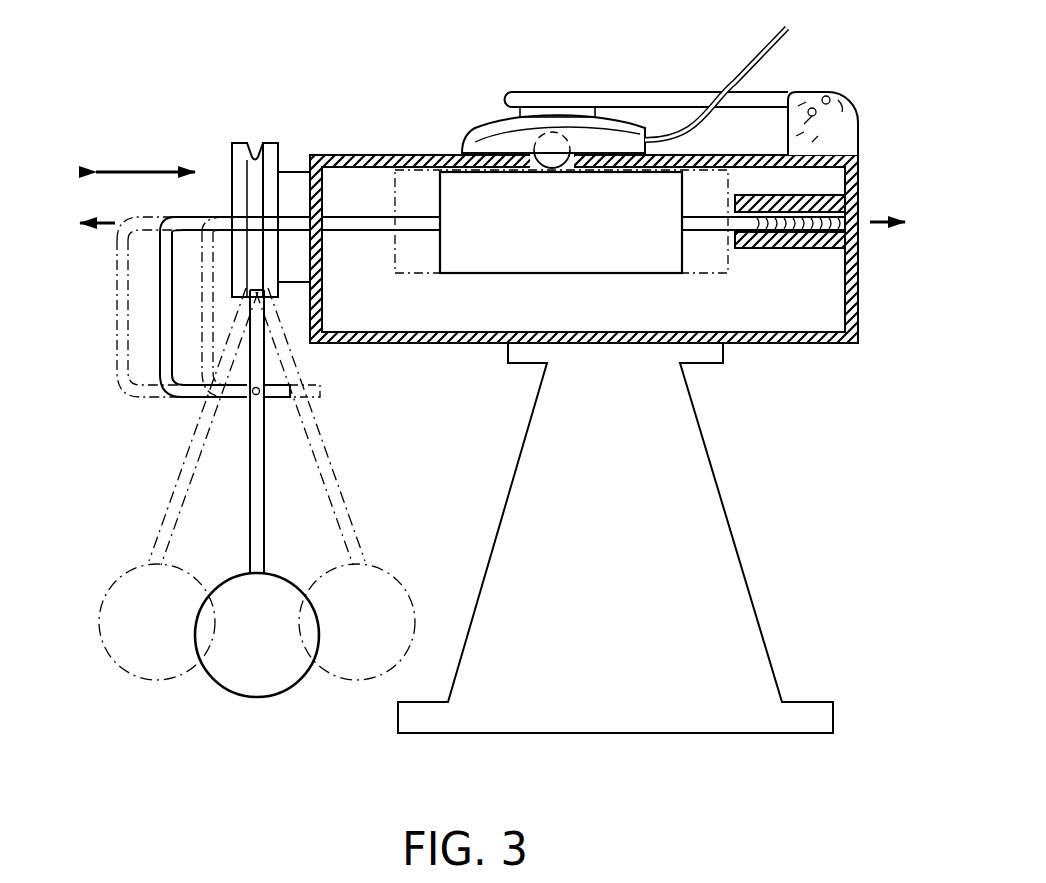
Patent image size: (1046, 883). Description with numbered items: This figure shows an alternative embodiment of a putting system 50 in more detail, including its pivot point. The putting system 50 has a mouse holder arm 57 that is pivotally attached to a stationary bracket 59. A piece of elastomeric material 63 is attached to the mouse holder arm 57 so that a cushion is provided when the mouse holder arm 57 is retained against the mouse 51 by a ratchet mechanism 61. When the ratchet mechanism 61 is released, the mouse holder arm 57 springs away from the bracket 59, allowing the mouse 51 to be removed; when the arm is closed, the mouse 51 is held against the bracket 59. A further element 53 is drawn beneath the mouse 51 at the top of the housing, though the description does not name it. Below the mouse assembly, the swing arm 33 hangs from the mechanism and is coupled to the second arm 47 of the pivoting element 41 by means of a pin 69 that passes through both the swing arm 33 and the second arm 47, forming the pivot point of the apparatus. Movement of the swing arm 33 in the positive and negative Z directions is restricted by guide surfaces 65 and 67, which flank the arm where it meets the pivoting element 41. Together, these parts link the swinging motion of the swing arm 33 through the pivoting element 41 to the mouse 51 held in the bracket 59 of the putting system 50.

The swing arm 33 is at (247, 520).
The pivoting element 41 is at (160, 318).
The second arm 47 is at (288, 389).
The putting system 50 is at (886, 579).
The mouse 51 is at (490, 126).
The roller 53 is at (552, 170).
The mouse holder arm 57 is at (546, 91).
The stationary bracket 59 is at (712, 460).
The ratchet mechanism 61 is at (850, 134).
The elastomeric material 63 is at (590, 107).
The guide surface 65 is at (245, 150).
The guide surface 67 is at (266, 150).
The pin 69 is at (248, 405).